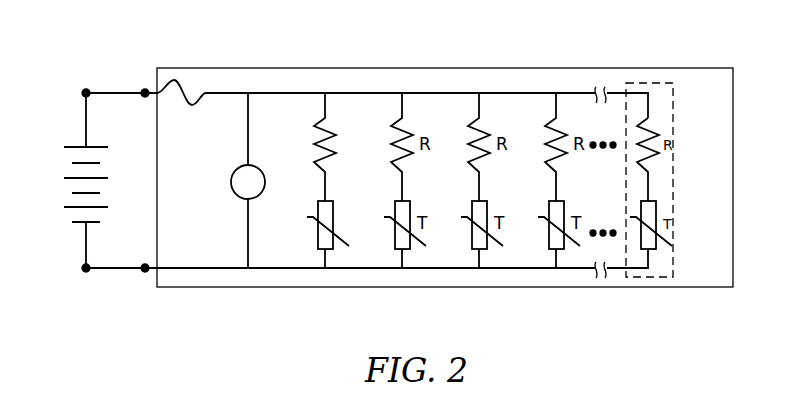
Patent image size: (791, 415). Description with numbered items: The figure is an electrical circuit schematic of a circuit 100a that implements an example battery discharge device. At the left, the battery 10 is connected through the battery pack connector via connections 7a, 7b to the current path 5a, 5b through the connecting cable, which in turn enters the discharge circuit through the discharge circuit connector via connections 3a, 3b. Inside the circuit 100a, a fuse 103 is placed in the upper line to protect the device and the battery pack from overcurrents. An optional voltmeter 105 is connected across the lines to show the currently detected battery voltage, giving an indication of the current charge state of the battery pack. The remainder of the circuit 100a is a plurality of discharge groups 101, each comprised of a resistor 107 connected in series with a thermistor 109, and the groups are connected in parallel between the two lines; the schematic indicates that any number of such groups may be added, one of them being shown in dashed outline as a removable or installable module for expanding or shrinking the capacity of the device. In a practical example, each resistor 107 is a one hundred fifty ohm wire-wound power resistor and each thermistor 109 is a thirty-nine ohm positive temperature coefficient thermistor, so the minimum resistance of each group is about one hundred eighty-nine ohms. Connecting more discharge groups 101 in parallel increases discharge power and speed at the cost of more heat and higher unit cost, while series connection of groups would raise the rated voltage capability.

The battery 10 is at (63, 161).
The connection 7a is at (85, 91).
The connection 7b is at (83, 272).
The current path 5a is at (126, 92).
The current path 5b is at (122, 270).
The connection 3a is at (145, 91).
The connection 3b is at (145, 272).
The fuse 103 is at (174, 80).
The voltmeter 105 is at (238, 195).
The resistor 107 is at (316, 118).
The thermistor 109 is at (322, 245).
The circuit 100a is at (530, 290).
The discharge group 101 is at (655, 278).